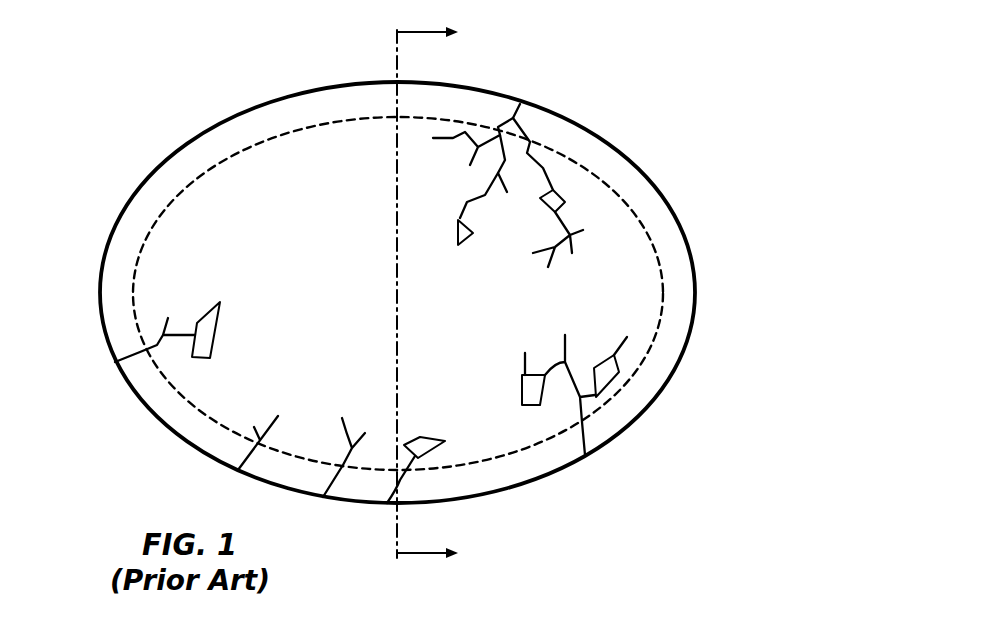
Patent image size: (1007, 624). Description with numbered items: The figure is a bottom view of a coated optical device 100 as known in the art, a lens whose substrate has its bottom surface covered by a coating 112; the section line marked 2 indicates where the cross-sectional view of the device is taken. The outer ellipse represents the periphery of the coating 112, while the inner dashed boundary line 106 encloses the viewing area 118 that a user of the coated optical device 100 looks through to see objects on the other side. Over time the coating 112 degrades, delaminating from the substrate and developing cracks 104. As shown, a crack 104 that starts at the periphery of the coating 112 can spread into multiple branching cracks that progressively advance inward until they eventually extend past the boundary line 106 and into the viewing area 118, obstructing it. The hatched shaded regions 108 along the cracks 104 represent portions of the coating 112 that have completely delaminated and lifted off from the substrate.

The coated optical device 100 is at (592, 78).
The section line 2- 2 is at (438, 294).
The cracks 104 is at (545, 167).
The boundary line 106 is at (657, 342).
The shaded regions 108 is at (213, 303).
The coating 112 is at (664, 222).
The viewing area 118 is at (243, 168).